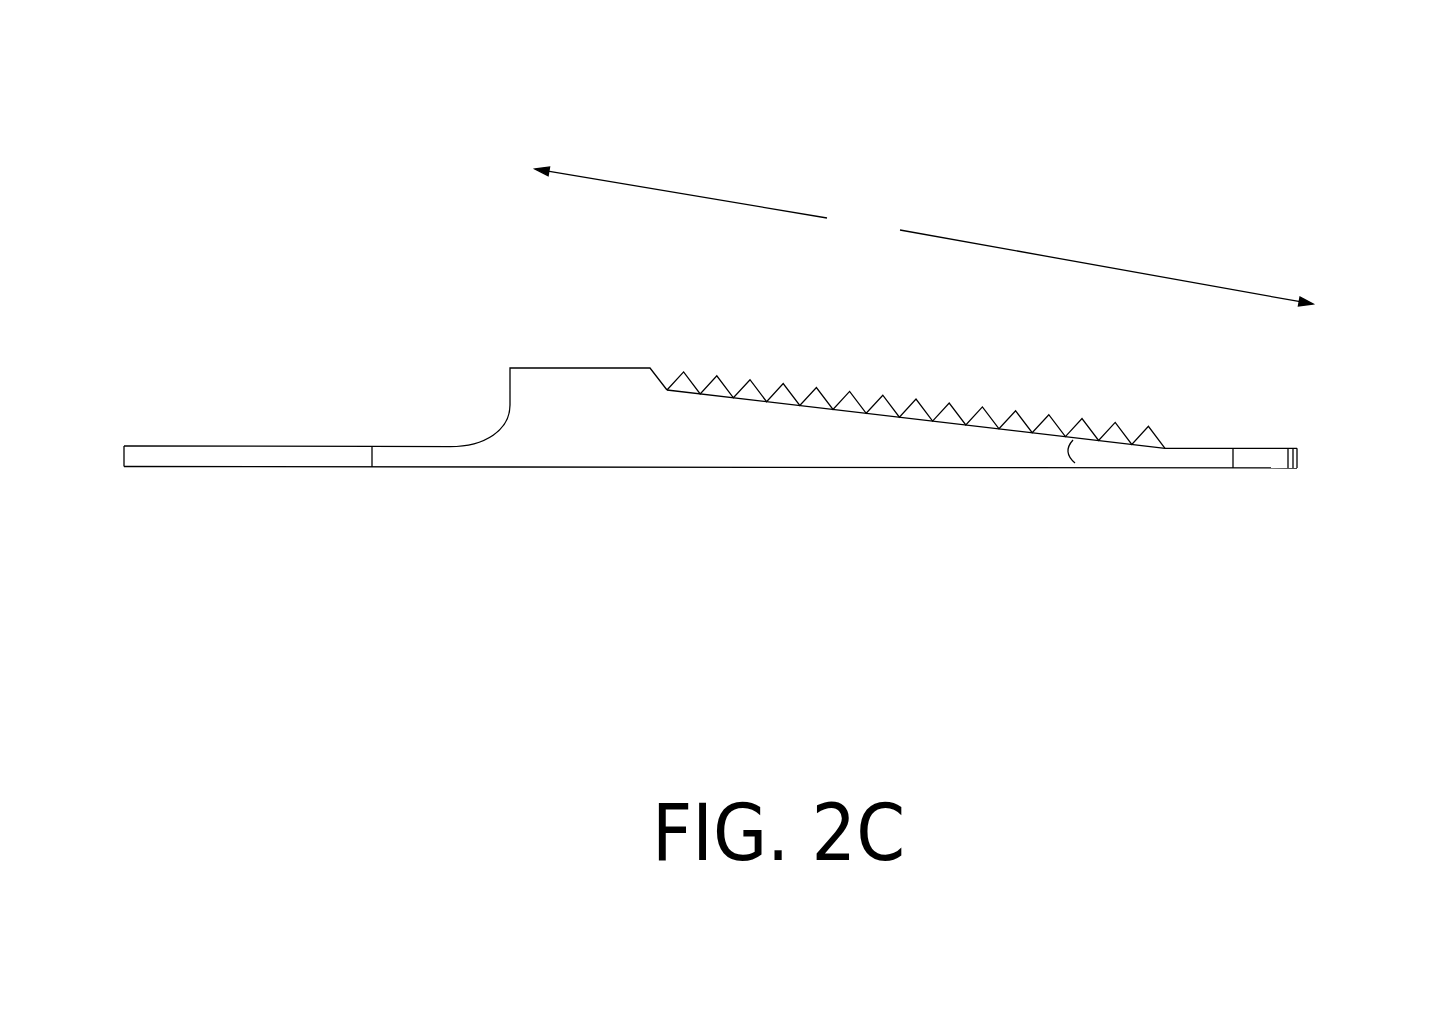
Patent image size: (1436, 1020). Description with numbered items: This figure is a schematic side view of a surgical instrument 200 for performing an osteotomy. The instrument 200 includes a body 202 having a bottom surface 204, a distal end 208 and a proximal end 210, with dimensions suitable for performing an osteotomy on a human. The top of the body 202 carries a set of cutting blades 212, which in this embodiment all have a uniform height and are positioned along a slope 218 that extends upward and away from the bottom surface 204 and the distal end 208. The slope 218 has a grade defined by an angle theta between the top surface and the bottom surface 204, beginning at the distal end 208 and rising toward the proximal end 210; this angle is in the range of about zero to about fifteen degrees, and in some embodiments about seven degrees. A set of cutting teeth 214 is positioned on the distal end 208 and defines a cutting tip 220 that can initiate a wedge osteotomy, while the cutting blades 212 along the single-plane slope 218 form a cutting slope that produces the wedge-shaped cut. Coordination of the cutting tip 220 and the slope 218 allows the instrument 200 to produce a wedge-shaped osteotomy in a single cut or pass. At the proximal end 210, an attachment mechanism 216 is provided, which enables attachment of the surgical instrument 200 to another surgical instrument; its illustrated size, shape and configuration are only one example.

The surgical instrument 200 is at (263, 163).
The body 202 is at (878, 467).
The bottom surface 204 is at (548, 475).
The distal end 208 is at (1185, 495).
The proximal end 210 is at (508, 308).
The set of cutting blades 212 is at (1153, 437).
The set of cutting teeth 214 is at (1266, 448).
The attachment mechanism 216 is at (260, 446).
The slope 218 is at (924, 236).
The cutting tip 220 is at (1262, 497).